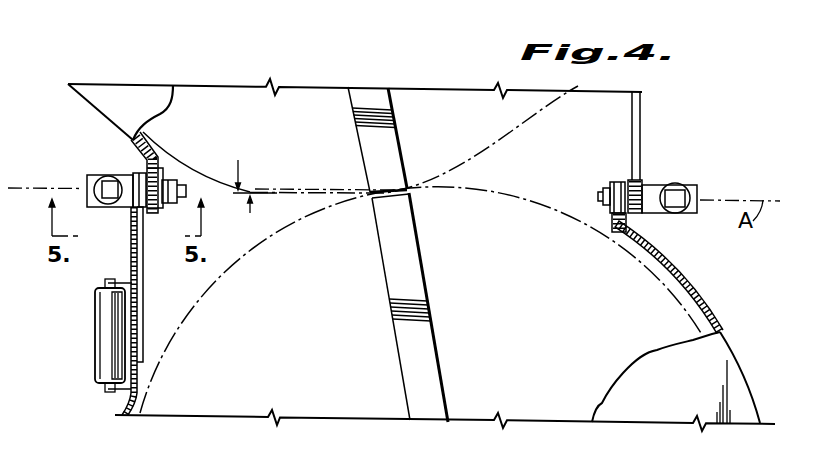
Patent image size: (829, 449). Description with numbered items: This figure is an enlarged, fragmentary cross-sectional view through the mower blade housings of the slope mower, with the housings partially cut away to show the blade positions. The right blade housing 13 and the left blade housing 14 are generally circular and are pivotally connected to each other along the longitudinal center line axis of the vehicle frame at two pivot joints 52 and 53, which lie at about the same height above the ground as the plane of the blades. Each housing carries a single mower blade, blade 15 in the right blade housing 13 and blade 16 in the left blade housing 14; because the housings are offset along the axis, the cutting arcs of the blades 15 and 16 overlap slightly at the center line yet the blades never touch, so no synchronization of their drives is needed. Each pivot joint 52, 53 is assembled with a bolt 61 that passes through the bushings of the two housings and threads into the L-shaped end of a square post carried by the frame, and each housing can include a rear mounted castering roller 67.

The right blade housing 13 is at (696, 400).
The left blade housing 14 is at (145, 92).
The mower blade 15 is at (407, 367).
The mower blade 16 is at (398, 138).
The pivot joint 52 is at (681, 159).
The pivot joint 53 is at (126, 162).
The bolt 61 is at (598, 197).
The castering roller 67 is at (100, 340).